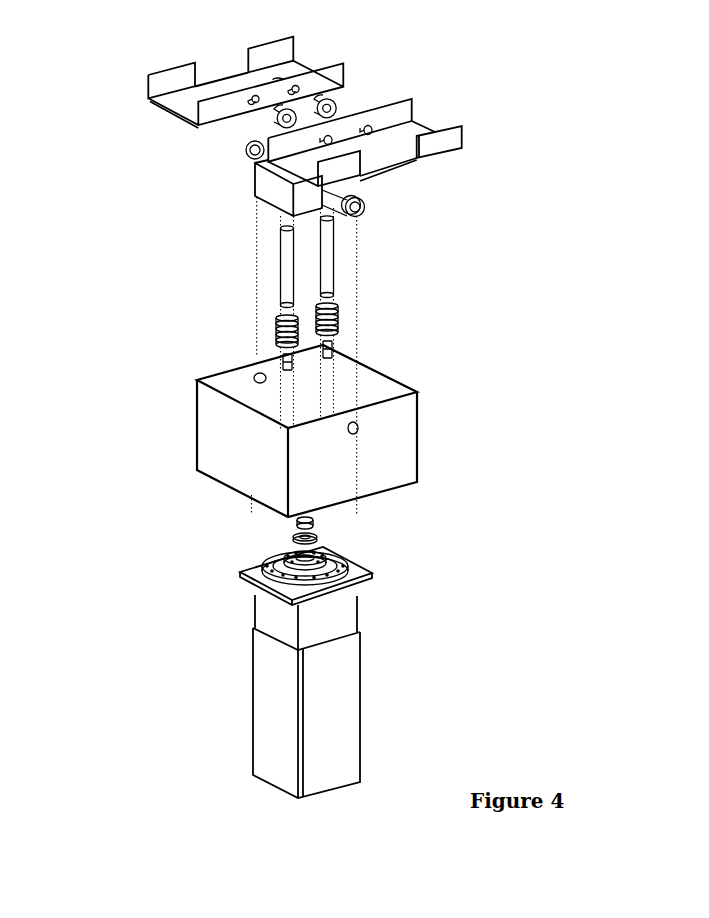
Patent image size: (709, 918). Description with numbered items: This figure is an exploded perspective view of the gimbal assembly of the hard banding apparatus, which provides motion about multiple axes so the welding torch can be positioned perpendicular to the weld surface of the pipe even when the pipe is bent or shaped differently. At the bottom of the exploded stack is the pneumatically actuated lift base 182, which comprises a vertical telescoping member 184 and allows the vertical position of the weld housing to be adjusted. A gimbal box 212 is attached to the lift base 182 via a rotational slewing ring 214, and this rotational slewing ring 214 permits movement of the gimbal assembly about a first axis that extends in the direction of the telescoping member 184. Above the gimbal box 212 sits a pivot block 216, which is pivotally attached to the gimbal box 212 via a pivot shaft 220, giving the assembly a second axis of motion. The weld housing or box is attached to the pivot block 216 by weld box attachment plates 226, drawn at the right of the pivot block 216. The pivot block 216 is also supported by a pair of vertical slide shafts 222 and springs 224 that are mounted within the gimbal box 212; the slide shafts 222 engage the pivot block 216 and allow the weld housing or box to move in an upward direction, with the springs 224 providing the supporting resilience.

The lift base 182 is at (253, 665).
The vertical telescoping member 184 is at (362, 618).
The gimbal box 212 is at (196, 423).
The rotational slewing ring 214 is at (341, 550).
The pivot block 216 is at (258, 190).
The pivot shaft 220 is at (369, 205).
The vertical slide shafts 222 is at (277, 280).
The springs 224 is at (340, 321).
The weld box attachment plates 226 is at (465, 135).